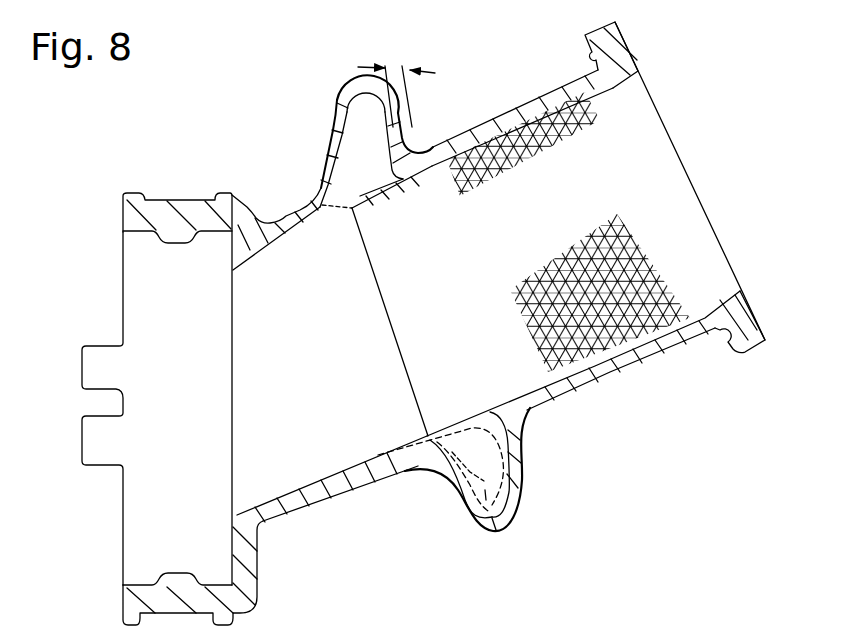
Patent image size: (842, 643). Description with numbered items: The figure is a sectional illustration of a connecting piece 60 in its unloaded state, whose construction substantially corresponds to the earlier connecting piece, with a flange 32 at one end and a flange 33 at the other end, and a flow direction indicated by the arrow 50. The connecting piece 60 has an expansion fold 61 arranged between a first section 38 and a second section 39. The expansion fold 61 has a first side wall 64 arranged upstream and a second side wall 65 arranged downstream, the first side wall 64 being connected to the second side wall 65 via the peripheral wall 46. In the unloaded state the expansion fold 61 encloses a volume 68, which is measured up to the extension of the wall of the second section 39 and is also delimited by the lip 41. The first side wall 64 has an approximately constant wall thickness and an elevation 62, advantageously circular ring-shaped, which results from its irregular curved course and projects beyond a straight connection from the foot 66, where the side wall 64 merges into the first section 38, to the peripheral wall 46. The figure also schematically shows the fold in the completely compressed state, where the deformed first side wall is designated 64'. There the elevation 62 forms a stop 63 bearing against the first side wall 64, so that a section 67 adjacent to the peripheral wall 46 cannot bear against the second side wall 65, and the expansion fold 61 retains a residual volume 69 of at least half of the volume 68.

The outlet flange 32 is at (642, 45).
The inlet flange 33 is at (115, 212).
The first section 38 is at (533, 107).
The second section 39 is at (285, 223).
The lip 41 is at (373, 195).
The peripheral wall 46 is at (489, 508).
The flow direction 50 is at (370, 380).
The connecting piece 60 is at (495, 316).
The expansion fold 61 is at (358, 115).
The elevation 62 is at (505, 453).
The stop 63 is at (457, 473).
The first side wall 64 is at (415, 132).
The deformed first side wall 64' is at (515, 484).
The second side wall 65 is at (336, 120).
The foot 66 is at (533, 422).
The section 67 is at (485, 490).
The volume 68 is at (358, 108).
The residual volume 69 is at (473, 498).